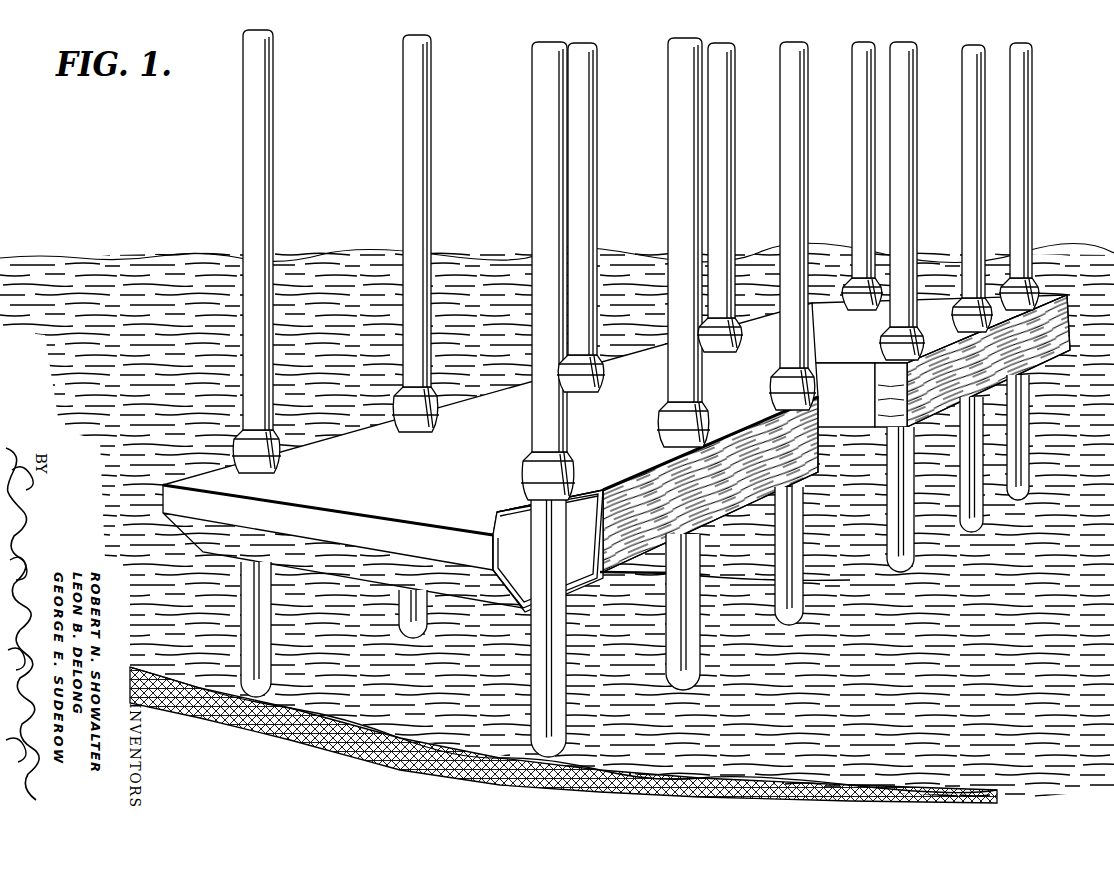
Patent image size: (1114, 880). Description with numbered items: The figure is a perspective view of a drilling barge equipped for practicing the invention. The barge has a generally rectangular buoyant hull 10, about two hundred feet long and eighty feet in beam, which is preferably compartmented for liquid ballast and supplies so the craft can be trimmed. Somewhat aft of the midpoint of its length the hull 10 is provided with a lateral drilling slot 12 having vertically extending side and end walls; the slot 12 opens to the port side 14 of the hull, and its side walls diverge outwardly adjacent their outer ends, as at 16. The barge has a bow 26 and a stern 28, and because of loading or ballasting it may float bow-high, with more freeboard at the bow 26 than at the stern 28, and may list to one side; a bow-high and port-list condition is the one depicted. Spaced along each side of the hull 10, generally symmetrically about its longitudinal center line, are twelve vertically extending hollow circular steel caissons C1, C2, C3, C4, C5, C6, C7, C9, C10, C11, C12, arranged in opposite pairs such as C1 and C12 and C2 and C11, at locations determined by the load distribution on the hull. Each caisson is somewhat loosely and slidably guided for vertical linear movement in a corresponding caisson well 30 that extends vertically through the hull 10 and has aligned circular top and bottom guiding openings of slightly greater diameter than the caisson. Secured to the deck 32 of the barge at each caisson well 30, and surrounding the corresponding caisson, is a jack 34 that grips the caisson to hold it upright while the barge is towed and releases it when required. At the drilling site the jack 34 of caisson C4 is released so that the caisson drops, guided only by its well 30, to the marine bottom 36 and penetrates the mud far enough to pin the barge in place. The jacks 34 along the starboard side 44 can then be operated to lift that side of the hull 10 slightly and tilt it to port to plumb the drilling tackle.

The buoyant hull 10 is at (506, 457).
The drilling slot 12 is at (828, 375).
The port side 14 is at (650, 478).
The outwardly diverging side walls of the slot 16 is at (885, 368).
The bow 26 is at (405, 535).
The stern 28 is at (1058, 297).
The caisson well 30 is at (520, 510).
The deck 32 is at (365, 455).
The jack 34 is at (279, 460).
The marine bottom 36 is at (303, 713).
The starboard side 44 is at (488, 386).
The caisson C1 is at (532, 151).
The caisson C2 is at (670, 149).
The caisson C3 is at (780, 137).
The caisson C4 is at (915, 122).
The caisson C5 is at (963, 175).
The caisson C6 is at (1030, 172).
The caisson C7 is at (856, 133).
The caisson C9 is at (734, 200).
The caisson C10 is at (597, 202).
The caisson C11 is at (431, 216).
The caisson C12 is at (273, 176).